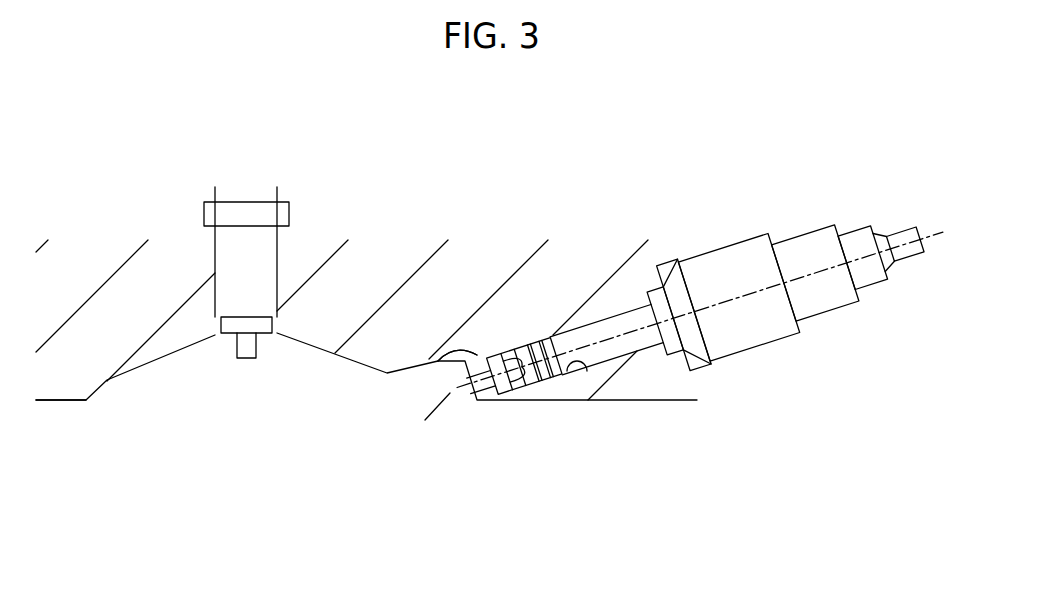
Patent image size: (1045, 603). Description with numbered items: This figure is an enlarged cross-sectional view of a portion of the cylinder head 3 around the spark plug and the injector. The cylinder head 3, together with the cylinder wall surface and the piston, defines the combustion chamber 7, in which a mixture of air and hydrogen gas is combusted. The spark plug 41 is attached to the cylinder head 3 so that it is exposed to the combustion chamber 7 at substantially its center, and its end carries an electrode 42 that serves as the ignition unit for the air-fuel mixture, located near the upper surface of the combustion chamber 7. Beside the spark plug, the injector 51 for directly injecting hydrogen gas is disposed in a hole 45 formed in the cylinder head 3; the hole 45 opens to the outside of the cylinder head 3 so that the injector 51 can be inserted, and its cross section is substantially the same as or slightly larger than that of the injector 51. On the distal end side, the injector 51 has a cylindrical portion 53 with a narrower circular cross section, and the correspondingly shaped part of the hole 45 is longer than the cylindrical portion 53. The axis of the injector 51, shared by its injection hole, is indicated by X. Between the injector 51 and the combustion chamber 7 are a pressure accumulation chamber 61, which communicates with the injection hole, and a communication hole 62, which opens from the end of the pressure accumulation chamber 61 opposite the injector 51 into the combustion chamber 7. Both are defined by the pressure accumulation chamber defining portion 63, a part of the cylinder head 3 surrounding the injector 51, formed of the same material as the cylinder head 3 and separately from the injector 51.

The cylinder head 3 is at (73, 373).
The combustion chamber 7 is at (166, 397).
The spark plug 41 is at (257, 216).
The electrode 42 is at (247, 349).
The hole 45 is at (587, 373).
The injector 51 is at (768, 330).
The cylindrical portion 53 is at (648, 330).
The pressure accumulation chamber 61 is at (507, 389).
The communication hole 62 is at (462, 396).
The pressure accumulation chamber defining portion 63 is at (438, 361).
The axis X is at (840, 268).